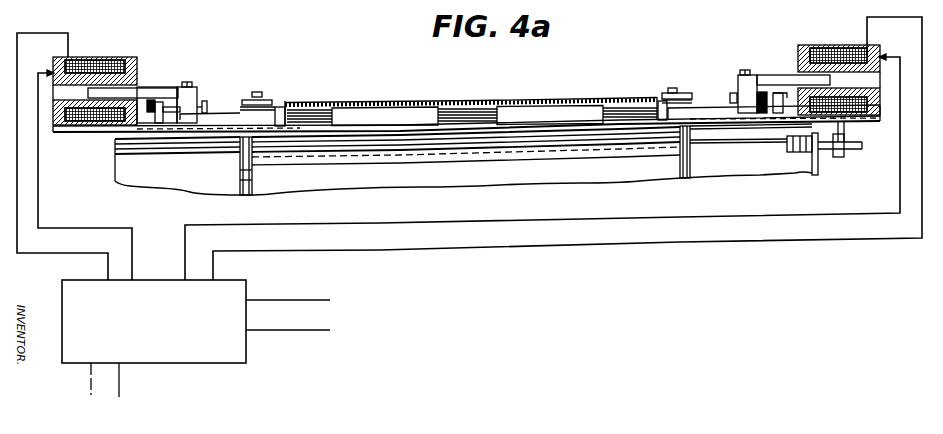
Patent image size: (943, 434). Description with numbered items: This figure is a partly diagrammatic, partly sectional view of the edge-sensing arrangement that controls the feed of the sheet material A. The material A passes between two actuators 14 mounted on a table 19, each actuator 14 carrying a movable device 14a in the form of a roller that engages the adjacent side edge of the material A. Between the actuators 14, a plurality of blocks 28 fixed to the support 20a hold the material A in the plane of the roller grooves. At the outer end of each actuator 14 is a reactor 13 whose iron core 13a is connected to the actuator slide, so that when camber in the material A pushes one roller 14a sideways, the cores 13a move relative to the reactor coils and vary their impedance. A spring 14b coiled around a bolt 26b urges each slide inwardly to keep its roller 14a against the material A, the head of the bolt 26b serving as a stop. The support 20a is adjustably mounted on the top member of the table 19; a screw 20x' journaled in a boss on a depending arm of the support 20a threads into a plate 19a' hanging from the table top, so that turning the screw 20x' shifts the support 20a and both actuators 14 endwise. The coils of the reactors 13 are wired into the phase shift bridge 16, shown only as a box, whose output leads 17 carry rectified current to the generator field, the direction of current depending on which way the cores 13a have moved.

The reactor 13 is at (137, 64).
The iron core 13a is at (172, 88).
The bolt 26b is at (205, 102).
The material engaging device 14a is at (270, 95).
The sheet material A is at (390, 101).
The blocks 28 is at (332, 116).
The actuator 14 is at (707, 108).
The spring 14b is at (760, 97).
The screw 20x' is at (751, 162).
The plate 19a' is at (826, 171).
The support 20a is at (845, 152).
The table 19 is at (157, 178).
The phase shift bridge 16 is at (156, 333).
The leads 17 is at (306, 300).